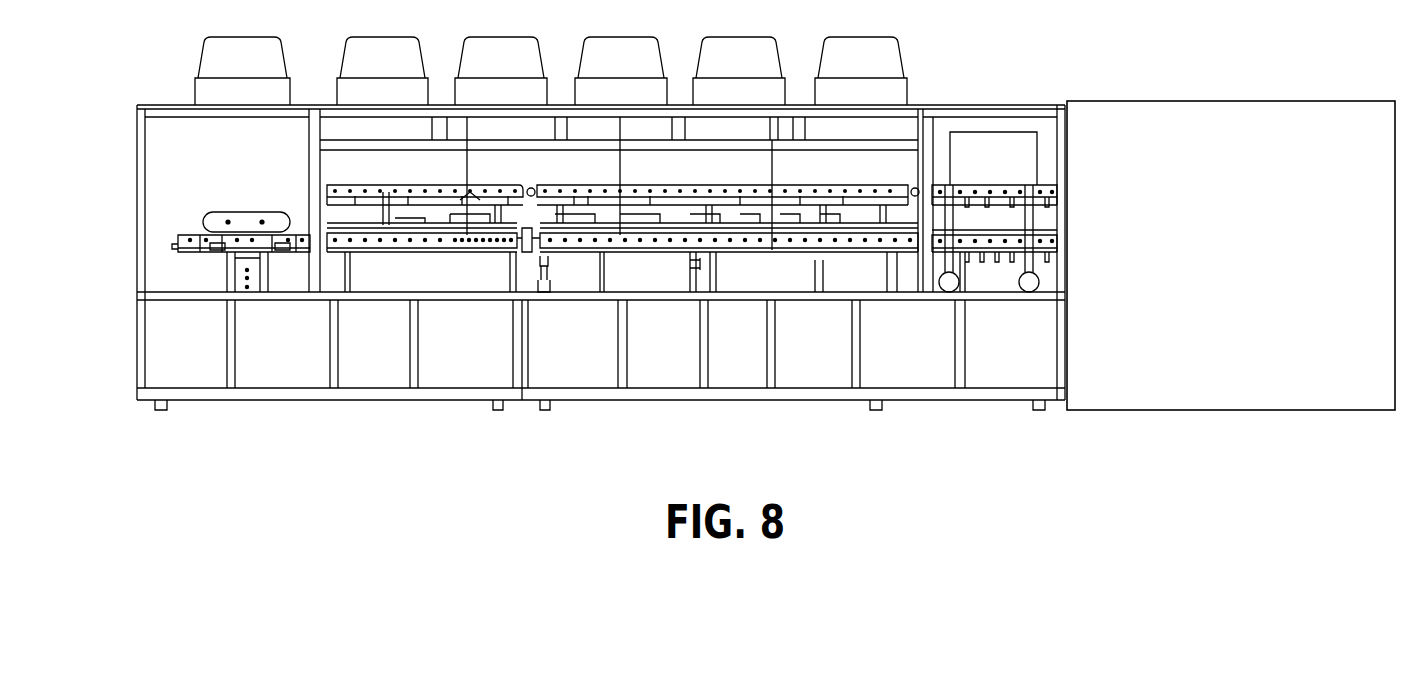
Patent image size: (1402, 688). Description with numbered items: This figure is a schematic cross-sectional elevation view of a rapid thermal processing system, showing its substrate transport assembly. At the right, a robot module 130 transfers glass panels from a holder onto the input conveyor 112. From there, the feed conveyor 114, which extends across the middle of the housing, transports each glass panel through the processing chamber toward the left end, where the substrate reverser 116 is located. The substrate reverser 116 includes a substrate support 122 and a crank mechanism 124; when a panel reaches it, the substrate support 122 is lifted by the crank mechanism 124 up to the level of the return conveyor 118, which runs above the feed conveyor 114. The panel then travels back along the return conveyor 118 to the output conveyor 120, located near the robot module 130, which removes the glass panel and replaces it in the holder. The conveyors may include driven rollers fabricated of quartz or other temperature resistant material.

The input conveyor 112 is at (993, 258).
The feed conveyor 114 is at (390, 252).
The substrate reverser 116 is at (226, 207).
The return conveyor 118 is at (728, 186).
The output conveyor 120 is at (1005, 192).
The substrate support 122 is at (195, 236).
The crank mechanism 124 is at (238, 212).
The robot module 130 is at (1131, 101).